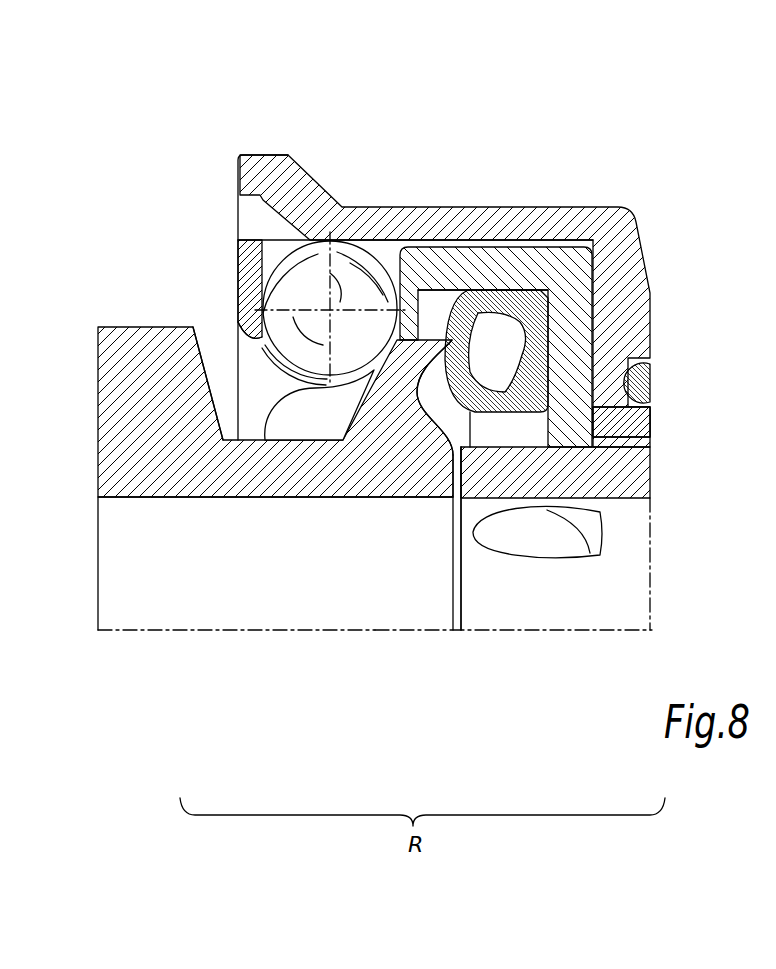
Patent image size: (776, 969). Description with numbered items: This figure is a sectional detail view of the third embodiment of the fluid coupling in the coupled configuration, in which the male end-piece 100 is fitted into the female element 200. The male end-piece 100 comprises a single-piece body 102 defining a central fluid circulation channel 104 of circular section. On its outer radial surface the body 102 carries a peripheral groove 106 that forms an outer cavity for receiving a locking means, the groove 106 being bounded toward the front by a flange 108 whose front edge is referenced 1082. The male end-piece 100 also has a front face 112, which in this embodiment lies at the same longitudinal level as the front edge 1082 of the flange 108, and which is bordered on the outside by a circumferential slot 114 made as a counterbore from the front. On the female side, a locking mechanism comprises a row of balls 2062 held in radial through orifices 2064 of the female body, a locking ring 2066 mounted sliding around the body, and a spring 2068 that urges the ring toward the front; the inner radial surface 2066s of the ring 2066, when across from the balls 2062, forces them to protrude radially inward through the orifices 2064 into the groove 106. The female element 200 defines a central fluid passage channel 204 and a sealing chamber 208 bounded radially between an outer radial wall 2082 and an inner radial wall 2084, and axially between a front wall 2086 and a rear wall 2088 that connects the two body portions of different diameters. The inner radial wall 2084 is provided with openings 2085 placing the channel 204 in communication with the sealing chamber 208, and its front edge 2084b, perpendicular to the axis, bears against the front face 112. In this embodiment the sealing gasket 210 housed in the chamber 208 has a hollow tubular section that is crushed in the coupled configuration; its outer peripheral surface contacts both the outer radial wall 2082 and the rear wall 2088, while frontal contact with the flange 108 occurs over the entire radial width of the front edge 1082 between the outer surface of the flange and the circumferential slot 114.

The male end-piece 100 is at (237, 542).
The body 102 is at (97, 484).
The central fluid circulation channel 104 is at (275, 563).
The peripheral groove 106 is at (217, 366).
The flange 108 is at (280, 420).
The front face 112 is at (464, 467).
The circumferential slot 114 is at (433, 418).
The female element 200 is at (410, 430).
The central fluid passage channel 204 is at (555, 538).
The sealing chamber 208 is at (529, 414).
The sealing gasket 210 is at (492, 289).
The front edge of the flange 1082 is at (565, 335).
The balls 2062 is at (297, 273).
The radial through orifices 2064 is at (391, 251).
The locking ring 2066 is at (480, 222).
The inner radial surface of the locking ring 2066s is at (256, 330).
The spring 2068 is at (654, 381).
The outer radial wall 2082 is at (540, 272).
The inner radial wall 2084 is at (490, 458).
The front edge of the inner radial wall 2084b is at (451, 484).
The openings 2085 is at (532, 542).
The front wall 2086 is at (344, 206).
The rear wall 2088 is at (467, 351).